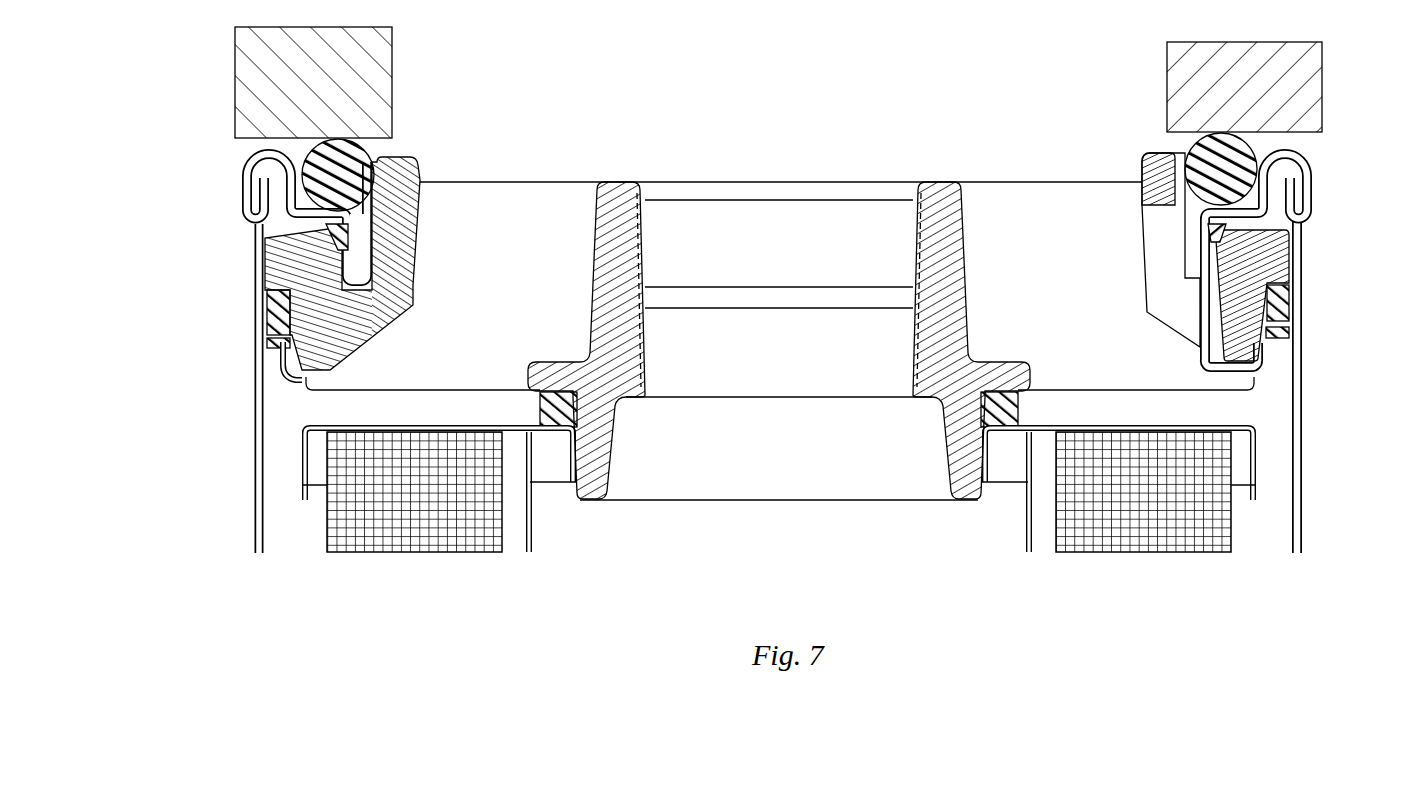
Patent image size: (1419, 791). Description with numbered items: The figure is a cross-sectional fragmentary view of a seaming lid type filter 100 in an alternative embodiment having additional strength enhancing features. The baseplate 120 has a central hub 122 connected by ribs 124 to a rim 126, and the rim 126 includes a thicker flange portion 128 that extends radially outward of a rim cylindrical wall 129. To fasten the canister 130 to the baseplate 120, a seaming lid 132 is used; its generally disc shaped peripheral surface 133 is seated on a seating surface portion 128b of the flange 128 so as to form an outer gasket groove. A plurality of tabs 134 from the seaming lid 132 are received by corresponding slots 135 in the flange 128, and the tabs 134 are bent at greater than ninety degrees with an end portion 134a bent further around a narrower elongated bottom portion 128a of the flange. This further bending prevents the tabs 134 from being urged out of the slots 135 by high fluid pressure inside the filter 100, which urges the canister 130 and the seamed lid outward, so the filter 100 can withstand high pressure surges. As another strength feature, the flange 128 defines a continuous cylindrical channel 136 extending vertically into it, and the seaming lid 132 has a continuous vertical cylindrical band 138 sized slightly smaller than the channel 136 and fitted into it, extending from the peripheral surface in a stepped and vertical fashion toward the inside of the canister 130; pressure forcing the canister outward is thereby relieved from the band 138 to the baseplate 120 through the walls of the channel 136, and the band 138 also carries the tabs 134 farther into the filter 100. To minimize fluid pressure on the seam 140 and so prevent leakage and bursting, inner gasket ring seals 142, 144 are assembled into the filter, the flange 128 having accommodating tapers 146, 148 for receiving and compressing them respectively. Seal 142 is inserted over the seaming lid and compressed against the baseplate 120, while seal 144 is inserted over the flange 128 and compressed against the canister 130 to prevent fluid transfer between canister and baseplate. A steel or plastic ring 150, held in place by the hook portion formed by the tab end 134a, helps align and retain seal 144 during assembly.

The filter 100 is at (743, 324).
The baseplate 120 is at (779, 393).
The central hub 122 is at (626, 358).
The ribs 124 is at (572, 331).
The rim 126 is at (410, 243).
The flange portion 128 is at (376, 264).
The narrower elongated bottom portion of the flange 128a is at (1282, 333).
The seating surface portion of the flange 128b is at (1240, 222).
The rim cylindrical wall 129 is at (405, 172).
The canister 130 is at (262, 520).
The seaming lid 132 is at (262, 150).
The peripheral surface 133 is at (1232, 212).
The tabs 134 is at (1208, 474).
The end portion of tab 134a is at (1262, 372).
The slots 135 is at (1150, 250).
The cylindrical channel 136 is at (374, 222).
The cylindrical band 138 is at (415, 289).
The seam 140 is at (1350, 183).
The inner gasket ring seal 142 is at (330, 232).
The inner gasket ring seal 144 is at (280, 306).
The taper 146 is at (338, 352).
The taper 148 is at (340, 241).
The ring 150 is at (283, 343).